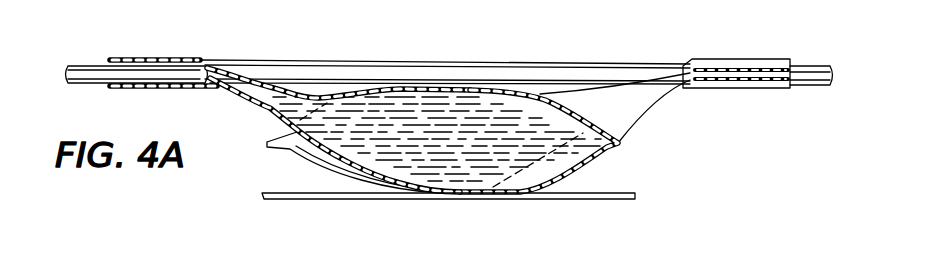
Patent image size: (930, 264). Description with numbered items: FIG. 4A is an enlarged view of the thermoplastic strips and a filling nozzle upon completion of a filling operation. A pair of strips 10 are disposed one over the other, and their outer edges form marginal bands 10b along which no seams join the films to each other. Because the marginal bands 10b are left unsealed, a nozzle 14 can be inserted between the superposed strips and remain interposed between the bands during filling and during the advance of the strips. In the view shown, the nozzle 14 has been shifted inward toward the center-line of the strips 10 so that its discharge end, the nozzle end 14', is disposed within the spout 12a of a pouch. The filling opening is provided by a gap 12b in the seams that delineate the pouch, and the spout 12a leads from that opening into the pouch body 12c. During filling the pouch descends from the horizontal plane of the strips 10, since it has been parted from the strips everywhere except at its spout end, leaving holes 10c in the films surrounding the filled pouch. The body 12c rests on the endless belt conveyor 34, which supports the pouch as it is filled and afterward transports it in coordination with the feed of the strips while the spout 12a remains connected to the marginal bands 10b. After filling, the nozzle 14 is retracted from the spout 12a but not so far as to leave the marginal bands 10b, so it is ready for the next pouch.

The strips 10 is at (384, 78).
The marginal bands 10b is at (172, 58).
The holes 10c is at (760, 66).
The spouts 12a is at (209, 58).
The gaps 12b is at (270, 87).
The bodies 12c is at (444, 92).
The nozzles 14 is at (811, 53).
The nozzle ends 14' is at (148, 44).
The endless belt conveyor 34 is at (586, 195).